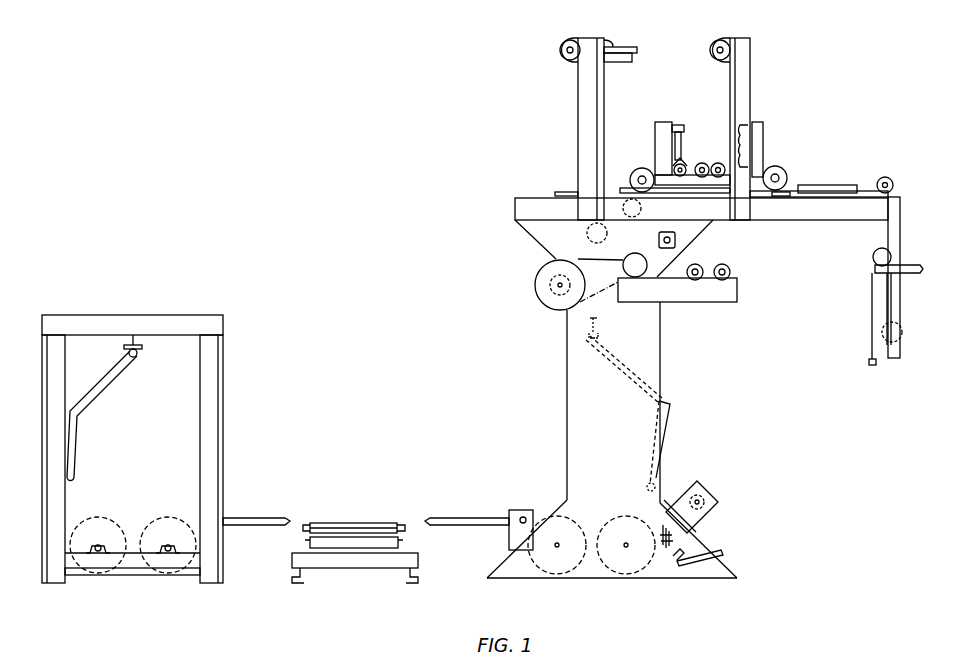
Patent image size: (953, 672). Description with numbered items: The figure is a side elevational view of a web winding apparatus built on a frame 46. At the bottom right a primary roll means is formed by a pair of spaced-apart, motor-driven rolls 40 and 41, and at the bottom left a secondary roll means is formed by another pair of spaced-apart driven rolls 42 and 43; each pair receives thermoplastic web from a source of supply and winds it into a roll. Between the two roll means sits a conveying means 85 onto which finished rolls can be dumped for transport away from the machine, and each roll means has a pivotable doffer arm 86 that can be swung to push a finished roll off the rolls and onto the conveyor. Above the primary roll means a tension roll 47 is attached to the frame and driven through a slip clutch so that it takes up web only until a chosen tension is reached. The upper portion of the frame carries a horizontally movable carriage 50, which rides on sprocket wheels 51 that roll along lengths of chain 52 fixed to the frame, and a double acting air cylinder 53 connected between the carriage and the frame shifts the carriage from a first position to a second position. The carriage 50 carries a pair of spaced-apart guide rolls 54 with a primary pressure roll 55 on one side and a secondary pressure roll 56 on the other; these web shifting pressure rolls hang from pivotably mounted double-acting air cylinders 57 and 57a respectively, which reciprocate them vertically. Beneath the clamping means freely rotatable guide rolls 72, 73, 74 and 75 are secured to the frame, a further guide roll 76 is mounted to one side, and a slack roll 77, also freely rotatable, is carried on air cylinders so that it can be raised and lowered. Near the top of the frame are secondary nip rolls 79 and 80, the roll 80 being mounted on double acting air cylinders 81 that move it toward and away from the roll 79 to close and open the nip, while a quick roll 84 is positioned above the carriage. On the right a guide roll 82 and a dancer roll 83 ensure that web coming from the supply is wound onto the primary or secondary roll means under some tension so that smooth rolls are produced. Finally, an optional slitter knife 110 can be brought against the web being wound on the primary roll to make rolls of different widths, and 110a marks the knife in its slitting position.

The primary roll 40 is at (648, 566).
The primary roll 41 is at (532, 514).
The secondary roll 42 is at (98, 520).
The secondary roll 43 is at (166, 520).
The frame 46 is at (567, 380).
The tension roll 47 is at (548, 295).
The carriage 50 is at (693, 196).
The sprocket wheels 51 is at (642, 168).
The chain 52 is at (628, 200).
The double acting air cylinder 53 is at (825, 184).
The guide rolls 54 is at (712, 163).
The primary pressure roll 55 is at (683, 164).
The secondary pressure roll 56 is at (760, 160).
The double-acting air cylinders 57 is at (680, 128).
The double-acting air cylinders 57a is at (750, 135).
The guide roll 72 is at (677, 240).
The guide roll 73 is at (700, 262).
The guide roll 74 is at (728, 266).
The guide roll 75 is at (706, 497).
The guide roll 76 is at (640, 254).
The slack roll 77 is at (586, 237).
The secondary nip roll 79 is at (566, 42).
The secondary nip roll 80 is at (608, 40).
The double acting air cylinders 81 is at (636, 48).
The guide roll 82 is at (893, 180).
The dancer roll 83 is at (900, 330).
The quick roll 84 is at (718, 40).
The conveying means 85 is at (366, 523).
The doffer arms 86 is at (97, 398).
The slitter knives 110 is at (693, 548).
The slitter knife slitting position 110a is at (660, 530).